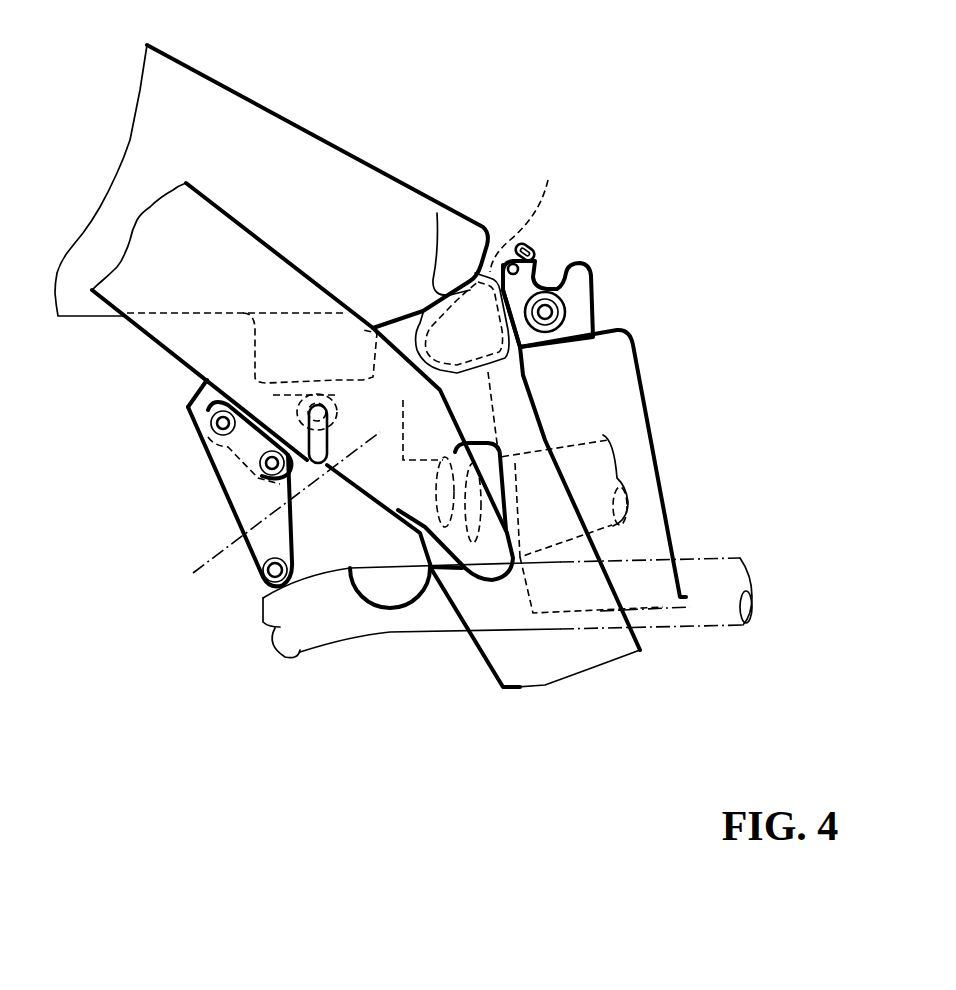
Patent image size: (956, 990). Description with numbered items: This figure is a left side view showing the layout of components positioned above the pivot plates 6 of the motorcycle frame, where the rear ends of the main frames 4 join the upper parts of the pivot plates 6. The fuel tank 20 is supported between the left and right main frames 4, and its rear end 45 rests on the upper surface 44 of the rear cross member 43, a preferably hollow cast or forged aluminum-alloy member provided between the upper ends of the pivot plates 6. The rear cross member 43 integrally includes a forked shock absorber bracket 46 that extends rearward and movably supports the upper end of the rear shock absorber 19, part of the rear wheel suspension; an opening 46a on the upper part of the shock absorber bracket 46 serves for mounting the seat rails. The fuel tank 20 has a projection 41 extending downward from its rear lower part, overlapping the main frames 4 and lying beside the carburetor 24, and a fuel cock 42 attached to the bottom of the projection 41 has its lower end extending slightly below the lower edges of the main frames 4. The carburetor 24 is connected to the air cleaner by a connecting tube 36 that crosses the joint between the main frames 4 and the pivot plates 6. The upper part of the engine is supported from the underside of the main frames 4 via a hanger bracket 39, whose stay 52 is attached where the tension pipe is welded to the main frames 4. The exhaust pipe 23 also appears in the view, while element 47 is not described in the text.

The main frame 4 is at (220, 220).
The pivot plate 6 is at (497, 663).
The rear shock absorber 19 is at (635, 383).
The fuel tank 20 is at (193, 77).
The exhaust pipe 23 is at (682, 623).
The carburetor 24 is at (387, 590).
The connecting tube 36 is at (620, 487).
The hanger bracket 39 is at (237, 485).
The projection 41 is at (253, 347).
The fuel cock 42 is at (270, 518).
The rear cross member 43 is at (532, 204).
The upper surface 44 is at (437, 213).
The rear end 45 is at (475, 272).
The shock absorber bracket 46 is at (592, 297).
The opening 46a is at (540, 258).
The boss 47 is at (577, 267).
The stay 52 is at (187, 407).